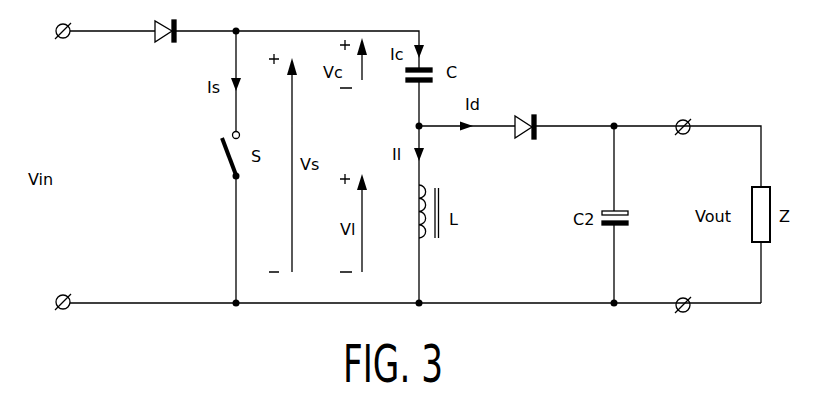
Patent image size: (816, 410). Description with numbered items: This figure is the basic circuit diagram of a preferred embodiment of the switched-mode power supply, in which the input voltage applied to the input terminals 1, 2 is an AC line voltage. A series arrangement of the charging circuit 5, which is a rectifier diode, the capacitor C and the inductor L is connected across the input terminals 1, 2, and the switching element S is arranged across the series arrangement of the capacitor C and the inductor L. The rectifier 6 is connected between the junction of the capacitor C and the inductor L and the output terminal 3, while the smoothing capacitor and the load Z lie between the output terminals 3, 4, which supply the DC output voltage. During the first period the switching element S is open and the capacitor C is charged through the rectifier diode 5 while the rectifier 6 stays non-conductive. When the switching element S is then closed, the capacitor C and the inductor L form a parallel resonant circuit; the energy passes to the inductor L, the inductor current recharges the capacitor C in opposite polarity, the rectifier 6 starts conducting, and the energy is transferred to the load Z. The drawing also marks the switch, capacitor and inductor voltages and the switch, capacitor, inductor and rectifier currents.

The input terminal 1 is at (57, 28).
The input terminal 2 is at (56, 299).
The output terminal 3 is at (683, 120).
The output terminal 4 is at (683, 298).
The charging circuit 5 is at (160, 44).
The rectifier 6 is at (520, 112).